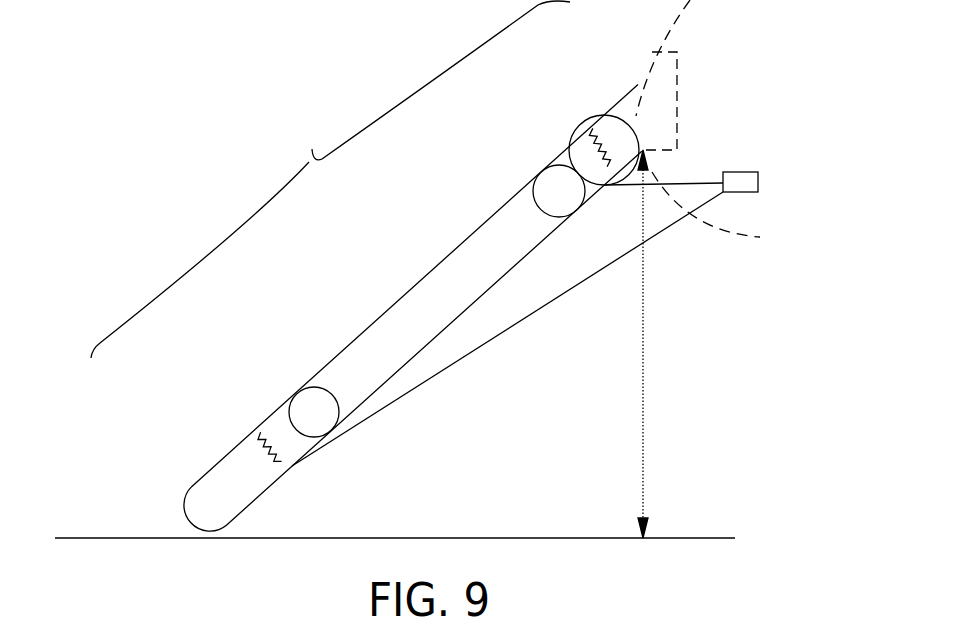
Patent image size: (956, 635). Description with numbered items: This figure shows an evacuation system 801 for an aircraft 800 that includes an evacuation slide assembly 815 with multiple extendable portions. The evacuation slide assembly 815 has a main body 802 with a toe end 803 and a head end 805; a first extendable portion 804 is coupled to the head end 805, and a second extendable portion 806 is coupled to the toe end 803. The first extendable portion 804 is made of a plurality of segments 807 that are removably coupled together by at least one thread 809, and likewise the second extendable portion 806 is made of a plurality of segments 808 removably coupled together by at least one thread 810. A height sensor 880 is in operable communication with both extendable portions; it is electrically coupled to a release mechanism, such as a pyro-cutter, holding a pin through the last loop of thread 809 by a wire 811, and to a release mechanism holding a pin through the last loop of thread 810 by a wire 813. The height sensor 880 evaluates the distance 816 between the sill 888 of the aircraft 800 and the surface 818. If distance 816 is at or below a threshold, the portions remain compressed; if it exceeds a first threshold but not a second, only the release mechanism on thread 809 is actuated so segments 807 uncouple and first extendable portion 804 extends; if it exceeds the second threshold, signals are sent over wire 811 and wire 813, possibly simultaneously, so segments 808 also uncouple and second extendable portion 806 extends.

The aircraft 800 is at (748, 60).
The evacuation system 801 is at (213, 136).
The main body 802 is at (443, 260).
The toe end 803 is at (324, 373).
The first extendable portion 804 is at (572, 133).
The head end 805 is at (559, 165).
The second extendable portion 806 is at (298, 467).
The segments 807 is at (614, 76).
The segments 808 is at (232, 380).
The thread 809 is at (606, 186).
The thread 810 is at (270, 457).
The wire 811 is at (652, 176).
The wire 813 is at (630, 245).
The evacuation slide assembly 815 is at (425, 179).
The distance 816 is at (642, 370).
The surface 818 is at (83, 538).
The height sensor 880 is at (759, 181).
The sill 888 is at (662, 134).